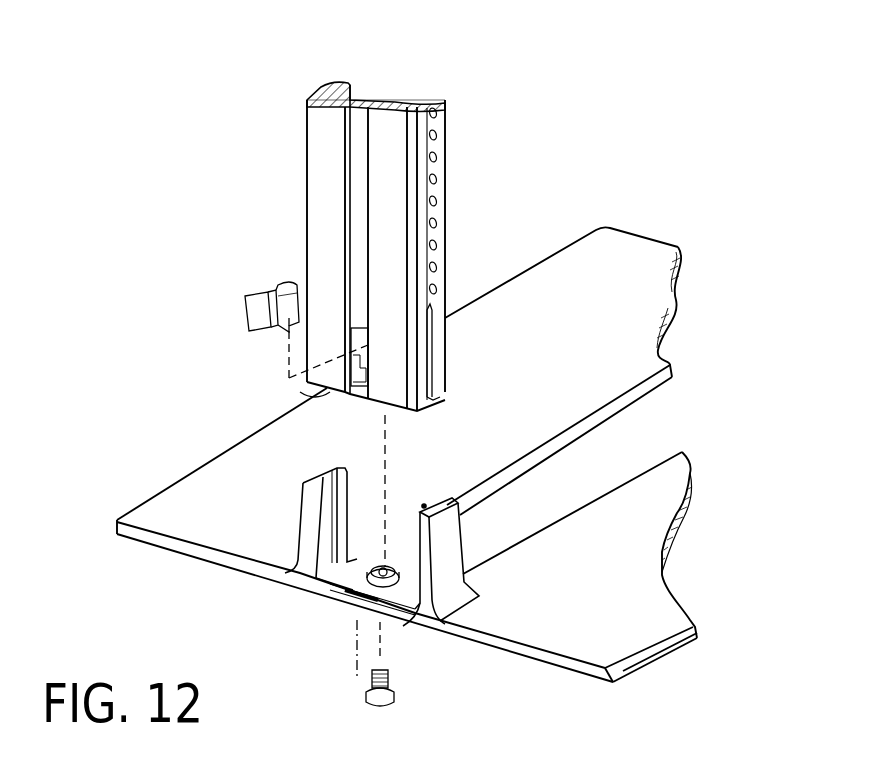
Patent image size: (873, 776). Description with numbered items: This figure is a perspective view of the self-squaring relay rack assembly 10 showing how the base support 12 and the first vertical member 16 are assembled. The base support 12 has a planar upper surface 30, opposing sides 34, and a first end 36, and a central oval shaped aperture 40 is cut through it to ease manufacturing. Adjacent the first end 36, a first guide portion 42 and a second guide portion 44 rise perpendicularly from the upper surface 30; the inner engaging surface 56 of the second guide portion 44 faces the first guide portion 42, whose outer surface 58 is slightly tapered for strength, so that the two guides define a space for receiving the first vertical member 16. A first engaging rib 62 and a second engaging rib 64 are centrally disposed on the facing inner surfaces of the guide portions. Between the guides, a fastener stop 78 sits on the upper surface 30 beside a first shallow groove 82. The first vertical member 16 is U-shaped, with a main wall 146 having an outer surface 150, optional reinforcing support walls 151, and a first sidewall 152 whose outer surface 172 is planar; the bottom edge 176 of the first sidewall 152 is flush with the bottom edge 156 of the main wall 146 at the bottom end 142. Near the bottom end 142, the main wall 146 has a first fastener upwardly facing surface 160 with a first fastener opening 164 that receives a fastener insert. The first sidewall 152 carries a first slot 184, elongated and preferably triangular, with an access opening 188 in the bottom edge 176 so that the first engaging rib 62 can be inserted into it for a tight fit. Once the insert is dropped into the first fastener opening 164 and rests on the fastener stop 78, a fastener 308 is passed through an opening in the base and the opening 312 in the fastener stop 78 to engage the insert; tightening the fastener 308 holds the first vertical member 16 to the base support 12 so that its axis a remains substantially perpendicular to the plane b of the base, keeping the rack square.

The self-squaring relay rack assembly 10 is at (637, 137).
The base support 12 is at (374, 535).
The first vertical member 16 is at (298, 78).
The upper surface 30 is at (168, 512).
The sides 34 is at (583, 316).
The first end 36 is at (142, 534).
The central oval shaped aperture 40 is at (622, 395).
The first guide portion 42 is at (550, 545).
The second guide portion 44 is at (283, 557).
The inner engaging surface 56 is at (273, 500).
The outer surface 58 is at (450, 556).
The first engaging rib 62 is at (425, 503).
The second engaging rib 64 is at (332, 520).
The fastener stop 78 is at (333, 581).
The first shallow groove 82 is at (398, 620).
The bottom end 142 is at (303, 233).
The main wall 146 is at (352, 188).
The outer surface 150 is at (360, 152).
The support walls 151 is at (320, 118).
The first sidewall 152 is at (448, 120).
The bottom edge 156 is at (330, 401).
The first fastener upwardly facing surface 160 is at (357, 322).
The first fastener opening 164 is at (440, 332).
The outer surface 172 is at (436, 167).
The bottom edge 176 is at (436, 390).
The first slot 184 is at (437, 345).
The access opening 188 is at (433, 401).
The fastener 308 is at (368, 700).
The opening 312 is at (381, 565).
The axis a is at (352, 650).
The plane b is at (578, 626).